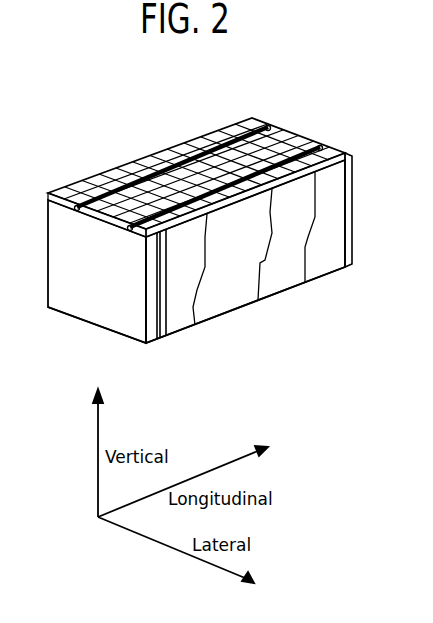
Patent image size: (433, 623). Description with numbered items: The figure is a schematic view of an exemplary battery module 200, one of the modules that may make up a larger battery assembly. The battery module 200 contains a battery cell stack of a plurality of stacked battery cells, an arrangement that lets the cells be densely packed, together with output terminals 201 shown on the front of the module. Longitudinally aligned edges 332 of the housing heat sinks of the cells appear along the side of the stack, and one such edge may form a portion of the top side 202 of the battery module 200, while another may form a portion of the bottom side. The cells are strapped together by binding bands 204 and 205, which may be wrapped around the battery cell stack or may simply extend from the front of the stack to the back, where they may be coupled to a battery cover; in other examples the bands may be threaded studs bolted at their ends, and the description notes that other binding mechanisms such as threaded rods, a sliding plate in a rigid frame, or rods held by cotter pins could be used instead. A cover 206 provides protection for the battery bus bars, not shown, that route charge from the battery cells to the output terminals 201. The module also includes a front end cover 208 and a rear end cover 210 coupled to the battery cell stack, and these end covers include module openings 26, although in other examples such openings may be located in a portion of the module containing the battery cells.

The battery module 200 is at (109, 101).
The top side 202 is at (205, 169).
The binding band 204 is at (240, 124).
The module openings 26 is at (130, 226).
The output terminals 201 is at (110, 242).
The cover 206 is at (180, 344).
The front end cover 208 is at (93, 328).
The binding band 205 is at (312, 163).
The longitudinally aligned edges 332 is at (207, 218).
The rear end cover 210 is at (334, 148).